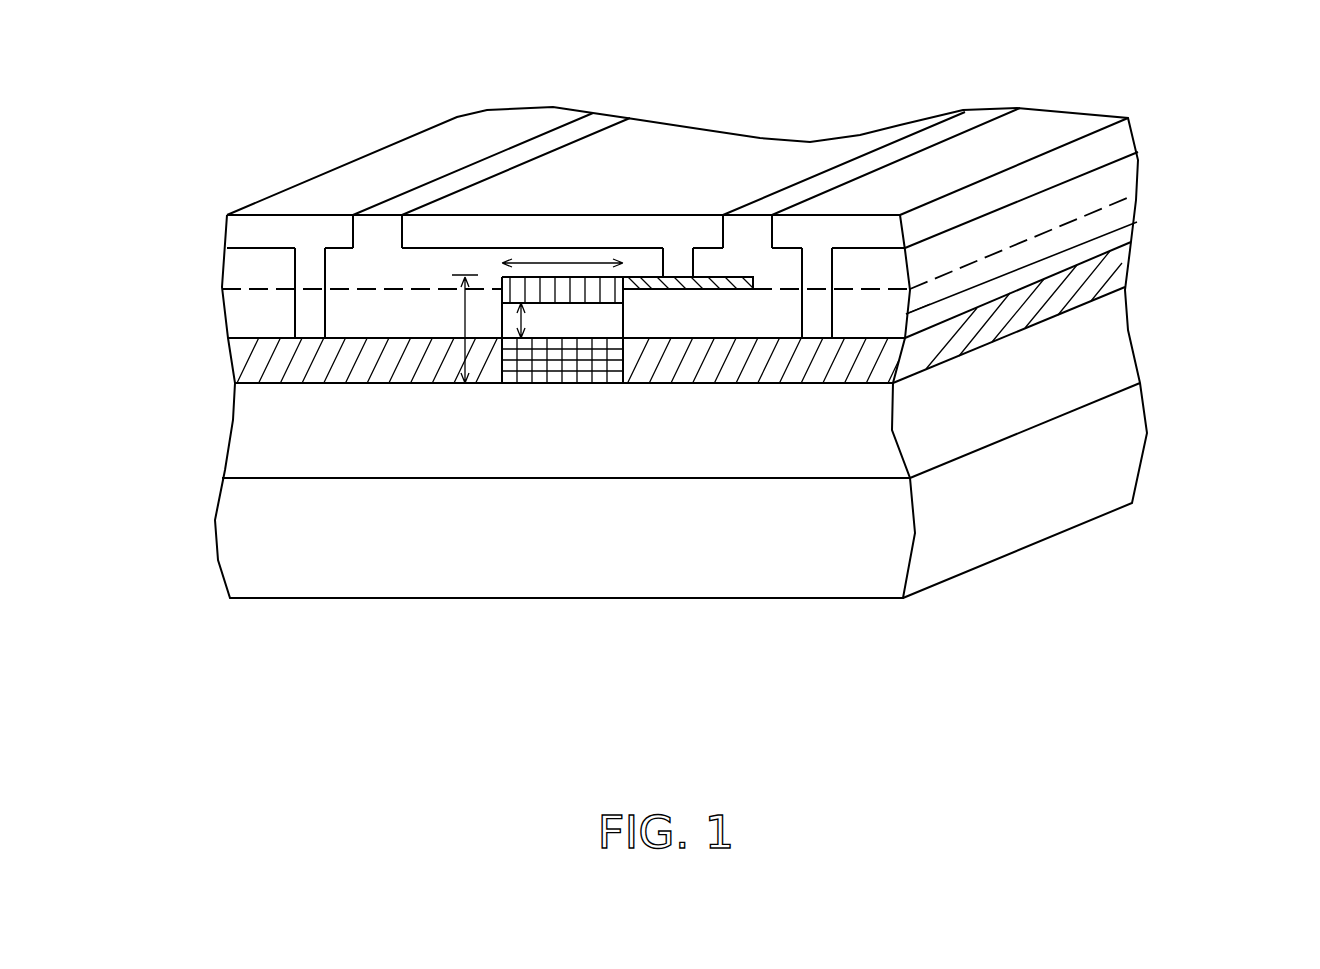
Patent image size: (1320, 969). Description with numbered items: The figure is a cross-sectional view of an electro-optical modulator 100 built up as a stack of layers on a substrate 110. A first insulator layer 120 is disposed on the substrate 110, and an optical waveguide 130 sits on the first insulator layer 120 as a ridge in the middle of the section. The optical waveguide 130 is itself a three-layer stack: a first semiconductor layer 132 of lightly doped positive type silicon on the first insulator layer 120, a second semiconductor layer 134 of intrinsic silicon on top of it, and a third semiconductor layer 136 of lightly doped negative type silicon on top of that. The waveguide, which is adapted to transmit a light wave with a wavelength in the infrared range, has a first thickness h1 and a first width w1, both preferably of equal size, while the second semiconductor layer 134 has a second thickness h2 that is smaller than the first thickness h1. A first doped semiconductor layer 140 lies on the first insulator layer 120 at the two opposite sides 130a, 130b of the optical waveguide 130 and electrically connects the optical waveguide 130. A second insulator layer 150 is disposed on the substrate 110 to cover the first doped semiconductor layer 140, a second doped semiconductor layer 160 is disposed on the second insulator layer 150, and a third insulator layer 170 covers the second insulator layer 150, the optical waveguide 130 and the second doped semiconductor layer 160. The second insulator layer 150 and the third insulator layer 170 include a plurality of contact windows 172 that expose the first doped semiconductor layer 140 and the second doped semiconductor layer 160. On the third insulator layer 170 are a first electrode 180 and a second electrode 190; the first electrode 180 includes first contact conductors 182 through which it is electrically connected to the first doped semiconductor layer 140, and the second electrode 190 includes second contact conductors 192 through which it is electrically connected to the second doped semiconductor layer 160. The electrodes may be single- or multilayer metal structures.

The electro-optical modulator 100 is at (1276, 641).
The substrate 110 is at (795, 545).
The first insulator layer 120 is at (731, 455).
The optical waveguide 130 is at (547, 505).
The side of the optical waveguide 130a is at (492, 322).
The side of the optical waveguide 130b is at (628, 308).
The first semiconductor layer 132 is at (590, 297).
The second semiconductor layer 134 is at (568, 323).
The third semiconductor layer 136 is at (542, 365).
The first doped semiconductor layer 140 is at (258, 360).
The second insulator layer 150 is at (262, 317).
The second doped semiconductor layer 160 is at (674, 290).
The third insulator layer 170 is at (265, 273).
The contact windows 172 is at (305, 267).
The first electrode 180 is at (276, 236).
The first contact conductors 182 is at (312, 317).
The second electrode 190 is at (563, 235).
The second contact conductors 192 is at (724, 265).
The first width w1 is at (535, 262).
The first thickness h1 is at (460, 342).
The second thickness h2 is at (519, 320).